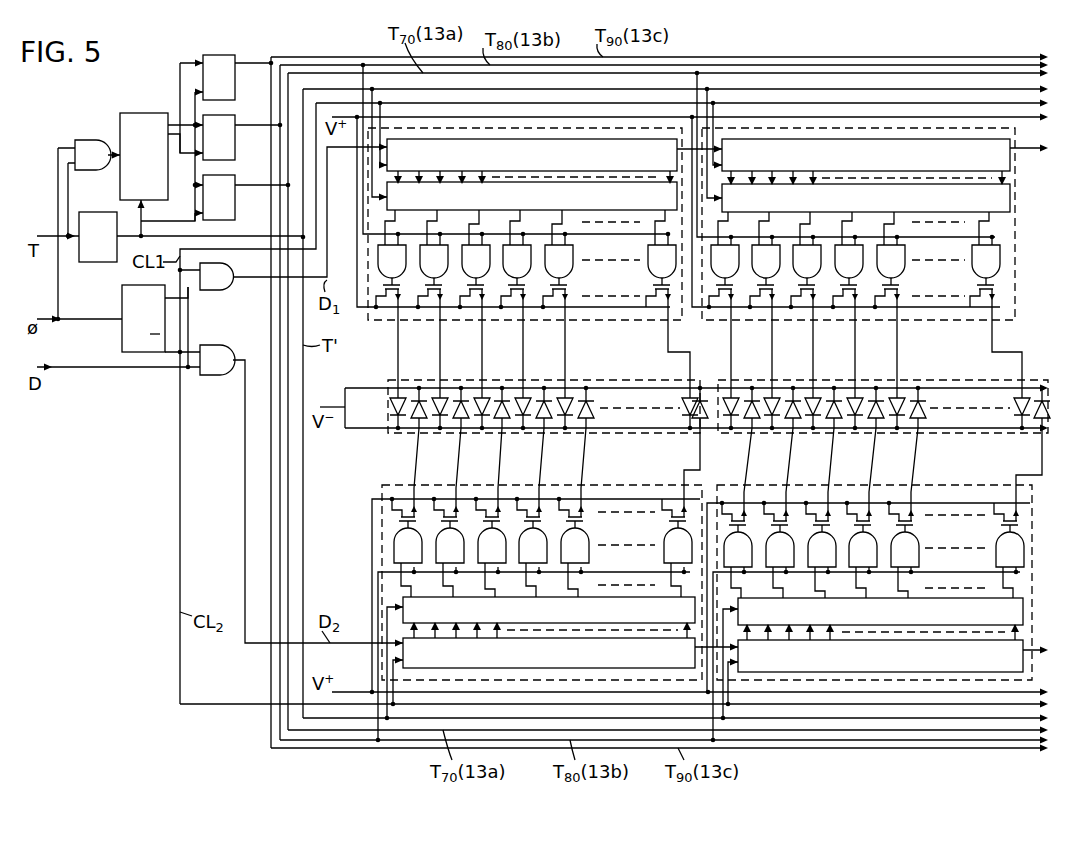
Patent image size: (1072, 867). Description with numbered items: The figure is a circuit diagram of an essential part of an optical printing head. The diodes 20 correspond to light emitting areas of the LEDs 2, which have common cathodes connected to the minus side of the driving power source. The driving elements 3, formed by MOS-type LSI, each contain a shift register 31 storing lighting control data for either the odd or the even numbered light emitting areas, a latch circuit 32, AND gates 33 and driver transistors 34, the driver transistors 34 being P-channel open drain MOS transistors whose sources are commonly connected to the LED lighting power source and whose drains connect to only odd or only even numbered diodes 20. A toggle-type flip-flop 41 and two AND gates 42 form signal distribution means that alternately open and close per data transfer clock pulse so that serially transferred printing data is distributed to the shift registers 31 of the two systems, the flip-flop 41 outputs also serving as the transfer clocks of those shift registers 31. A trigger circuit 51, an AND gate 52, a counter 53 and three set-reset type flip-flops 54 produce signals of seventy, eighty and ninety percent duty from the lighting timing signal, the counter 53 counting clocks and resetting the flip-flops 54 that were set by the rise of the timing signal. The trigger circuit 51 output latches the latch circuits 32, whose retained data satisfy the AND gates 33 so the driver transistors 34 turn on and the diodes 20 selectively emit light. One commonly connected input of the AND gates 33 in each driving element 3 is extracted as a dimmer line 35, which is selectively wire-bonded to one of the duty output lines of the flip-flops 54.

The LED 2 is at (388, 433).
The driving element 3 is at (368, 320).
The diode 20 is at (400, 415).
The shift register 31 is at (388, 172).
The latch circuit 32 is at (388, 206).
The AND gate 33 is at (402, 280).
The driver transistor 34 is at (404, 300).
The dimmer line 35 is at (363, 85).
The toggle-type flip-flop 41 is at (122, 345).
The AND gate 42 is at (220, 290).
The trigger circuit 51 is at (97, 262).
The AND gate 52 is at (92, 140).
The counter 53 is at (156, 113).
The set-reset type flip-flop 54 is at (236, 87).